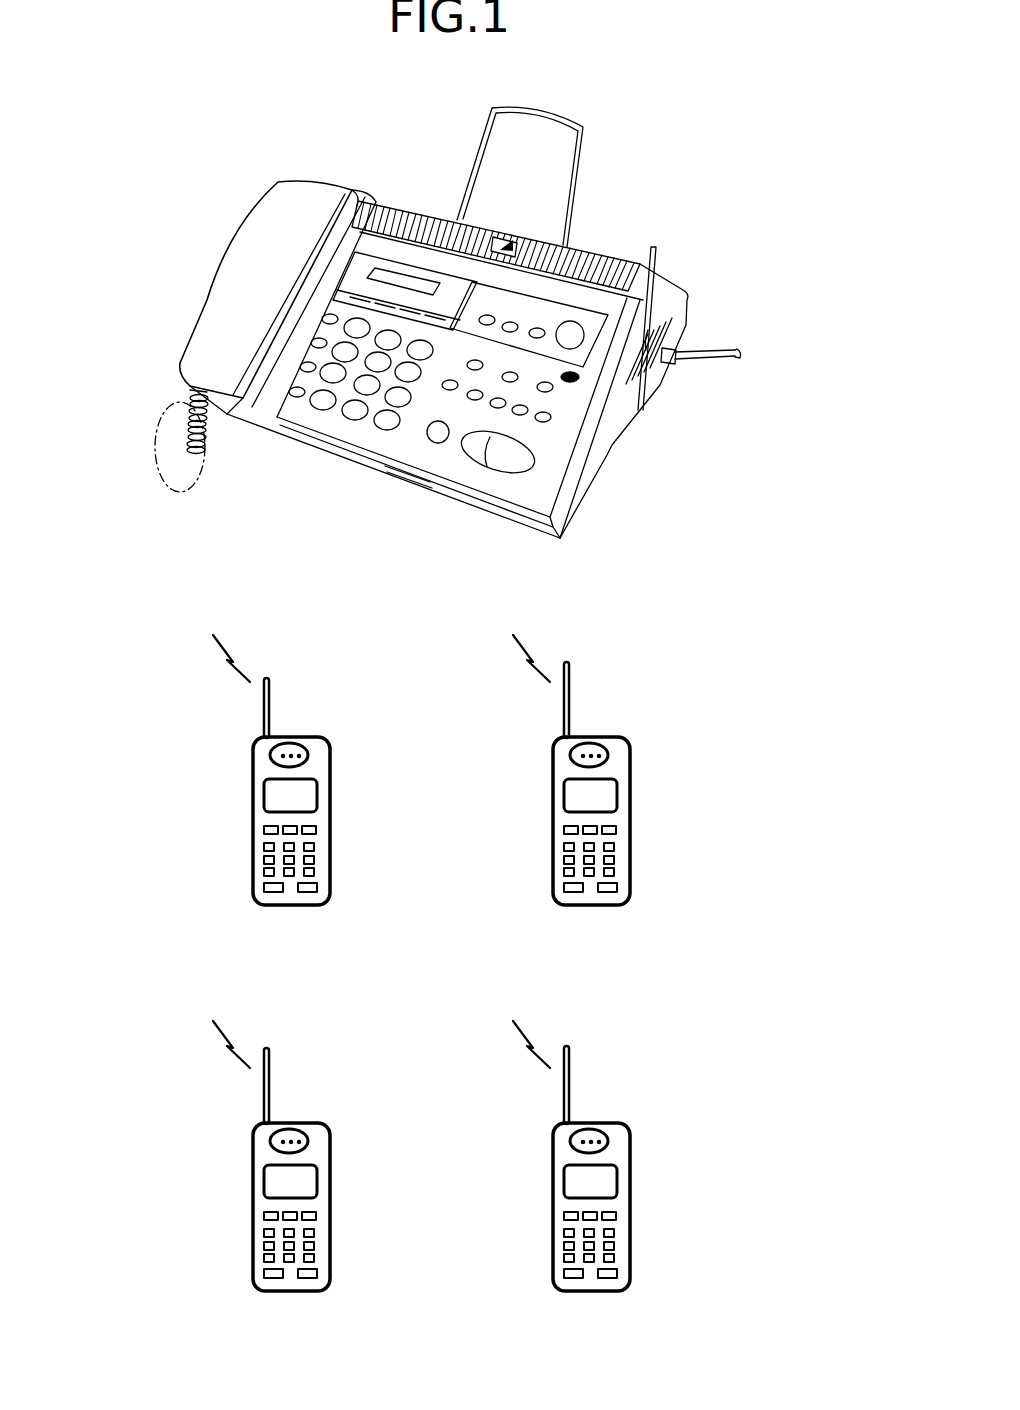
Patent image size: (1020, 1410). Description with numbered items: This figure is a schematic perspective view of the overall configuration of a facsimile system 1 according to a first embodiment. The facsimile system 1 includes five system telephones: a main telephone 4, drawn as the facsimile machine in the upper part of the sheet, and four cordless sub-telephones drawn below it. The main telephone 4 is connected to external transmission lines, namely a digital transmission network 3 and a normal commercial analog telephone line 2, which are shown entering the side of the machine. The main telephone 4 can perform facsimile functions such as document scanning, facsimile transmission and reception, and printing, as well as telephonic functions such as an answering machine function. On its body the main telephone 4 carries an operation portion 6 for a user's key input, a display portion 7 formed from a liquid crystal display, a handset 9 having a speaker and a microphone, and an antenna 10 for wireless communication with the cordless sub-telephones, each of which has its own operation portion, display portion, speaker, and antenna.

The facsimile system 1 is at (201, 165).
The normal commercial analog telephone line 2 is at (737, 366).
The digital transmission network 3 is at (702, 353).
The main telephone 4 is at (679, 244).
The operation portion 6 is at (411, 442).
The display portion 7 is at (350, 256).
The handset 9 is at (217, 313).
The antenna 10 is at (670, 374).